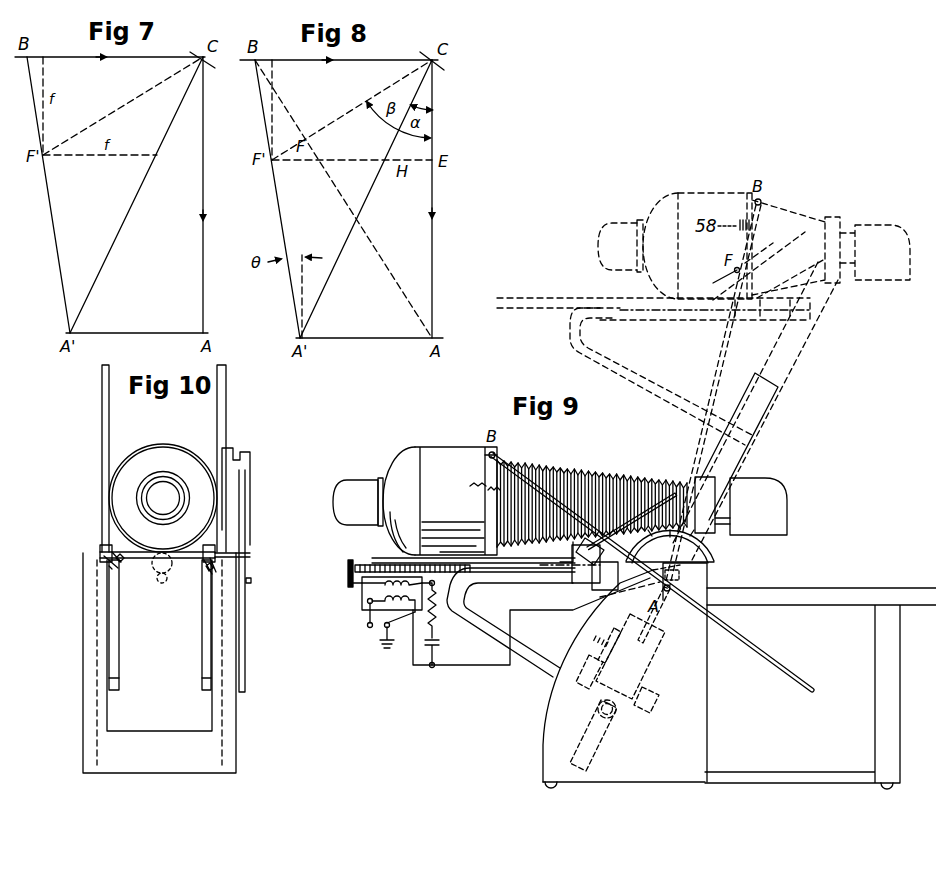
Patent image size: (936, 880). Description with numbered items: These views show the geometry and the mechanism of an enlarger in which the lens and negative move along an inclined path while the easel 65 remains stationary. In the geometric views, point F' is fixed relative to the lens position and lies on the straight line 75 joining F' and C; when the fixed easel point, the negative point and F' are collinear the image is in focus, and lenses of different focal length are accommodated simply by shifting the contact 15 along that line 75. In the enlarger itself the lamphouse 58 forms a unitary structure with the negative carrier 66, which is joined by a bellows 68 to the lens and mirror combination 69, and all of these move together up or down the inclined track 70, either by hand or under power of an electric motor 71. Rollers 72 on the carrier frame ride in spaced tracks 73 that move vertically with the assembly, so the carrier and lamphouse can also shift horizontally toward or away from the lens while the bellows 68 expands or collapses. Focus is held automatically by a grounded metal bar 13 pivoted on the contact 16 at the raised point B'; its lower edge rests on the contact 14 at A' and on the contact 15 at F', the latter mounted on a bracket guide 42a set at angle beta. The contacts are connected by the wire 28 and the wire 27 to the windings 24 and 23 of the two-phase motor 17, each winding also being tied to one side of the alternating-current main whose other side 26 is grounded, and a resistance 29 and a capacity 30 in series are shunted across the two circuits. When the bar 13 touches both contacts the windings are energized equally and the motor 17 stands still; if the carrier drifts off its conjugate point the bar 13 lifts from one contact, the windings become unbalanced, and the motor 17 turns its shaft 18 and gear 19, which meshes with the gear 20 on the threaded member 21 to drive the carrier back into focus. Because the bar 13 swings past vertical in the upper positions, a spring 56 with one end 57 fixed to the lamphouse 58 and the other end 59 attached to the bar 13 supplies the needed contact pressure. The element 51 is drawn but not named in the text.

In FIG. 7, the straight line connecting F' and C 75 is at (143, 102).
In FIG. 8, the straight line connecting F' and C 75 is at (345, 112).
In FIG. 10, the rollers 72 is at (100, 548).
In FIG. 10, the spaced tracks 73 is at (108, 552).
In FIG. 9, the lamphouse 58 is at (410, 450).
In FIG. 9, the negative carrier 66 is at (486, 470).
In FIG. 9, the spring end 57 is at (470, 486).
In FIG. 9, the spring 56 is at (488, 492).
In FIG. 9, the spring end 59 is at (548, 466).
In FIG. 9, the contact 16 is at (497, 457).
In FIG. 9, the threaded member 21 is at (364, 558).
In FIG. 9, the gear 20 is at (348, 562).
In FIG. 9, the gear 19 is at (353, 581).
In FIG. 9, the shaft 18 is at (362, 596).
In FIG. 9, the winding 23 is at (368, 603).
In FIG. 9, the motor 17 is at (372, 603).
In FIG. 9, the side of A. C. main 26 is at (369, 627).
In FIG. 9, the winding 24 is at (408, 612).
In FIG. 9, the resistance 29 is at (436, 622).
In FIG. 9, the capacity 30 is at (436, 648).
In FIG. 9, the wire 28 is at (475, 665).
In FIG. 9, the wire 27 is at (500, 583).
In FIG. 9, the bellows 68 is at (606, 482).
In FIG. 9, the bracket guide 42a is at (668, 492).
In FIG. 9, the arcuate guide 51 is at (713, 557).
In FIG. 9, the contact 14 is at (672, 588).
In FIG. 9, the bar 13 is at (768, 644).
In FIG. 9, the easel 65 is at (834, 588).
In FIG. 9, the electric motor 71 is at (645, 644).
In FIG. 9, the lens and mirror combination 69 is at (802, 376).
In FIG. 9, the inclined track 70 is at (758, 404).
In FIG. 9, the contact 15 is at (715, 282).